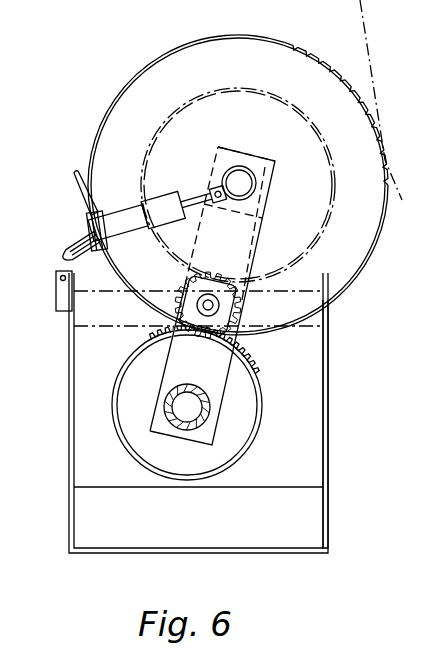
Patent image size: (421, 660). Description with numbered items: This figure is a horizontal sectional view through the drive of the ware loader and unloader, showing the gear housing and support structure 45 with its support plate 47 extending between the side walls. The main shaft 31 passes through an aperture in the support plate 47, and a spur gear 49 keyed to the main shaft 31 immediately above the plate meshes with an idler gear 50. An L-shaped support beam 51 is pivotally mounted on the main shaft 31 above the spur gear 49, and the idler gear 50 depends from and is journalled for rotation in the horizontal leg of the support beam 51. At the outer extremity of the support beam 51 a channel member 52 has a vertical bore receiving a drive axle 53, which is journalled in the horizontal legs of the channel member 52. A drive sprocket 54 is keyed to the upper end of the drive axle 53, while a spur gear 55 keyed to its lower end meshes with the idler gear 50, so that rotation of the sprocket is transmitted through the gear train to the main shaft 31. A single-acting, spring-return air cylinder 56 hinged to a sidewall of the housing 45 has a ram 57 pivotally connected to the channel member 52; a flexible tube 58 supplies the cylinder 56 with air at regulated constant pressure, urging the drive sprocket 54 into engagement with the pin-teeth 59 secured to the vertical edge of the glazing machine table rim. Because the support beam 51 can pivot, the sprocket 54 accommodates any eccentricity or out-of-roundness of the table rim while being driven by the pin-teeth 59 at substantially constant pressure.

The main shaft 31 is at (188, 384).
The gear housing and support structure 45 is at (68, 387).
The support plate 47 is at (318, 463).
The spur gear 49 is at (263, 396).
The idler gear 50 is at (182, 318).
The L-shaped support beam 51 is at (243, 343).
The channel member 52 is at (216, 155).
The drive axle 53 is at (243, 166).
The drive sprocket 54 is at (130, 92).
The spur gear 55 is at (297, 111).
The single-acting air cylinder 56 is at (90, 237).
The ram 57 is at (193, 196).
The flexible tube 58 is at (82, 192).
The pin-teeth 59 is at (373, 52).